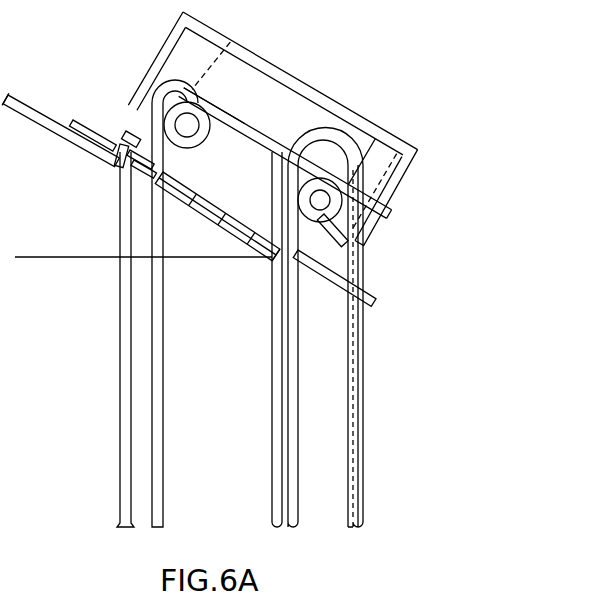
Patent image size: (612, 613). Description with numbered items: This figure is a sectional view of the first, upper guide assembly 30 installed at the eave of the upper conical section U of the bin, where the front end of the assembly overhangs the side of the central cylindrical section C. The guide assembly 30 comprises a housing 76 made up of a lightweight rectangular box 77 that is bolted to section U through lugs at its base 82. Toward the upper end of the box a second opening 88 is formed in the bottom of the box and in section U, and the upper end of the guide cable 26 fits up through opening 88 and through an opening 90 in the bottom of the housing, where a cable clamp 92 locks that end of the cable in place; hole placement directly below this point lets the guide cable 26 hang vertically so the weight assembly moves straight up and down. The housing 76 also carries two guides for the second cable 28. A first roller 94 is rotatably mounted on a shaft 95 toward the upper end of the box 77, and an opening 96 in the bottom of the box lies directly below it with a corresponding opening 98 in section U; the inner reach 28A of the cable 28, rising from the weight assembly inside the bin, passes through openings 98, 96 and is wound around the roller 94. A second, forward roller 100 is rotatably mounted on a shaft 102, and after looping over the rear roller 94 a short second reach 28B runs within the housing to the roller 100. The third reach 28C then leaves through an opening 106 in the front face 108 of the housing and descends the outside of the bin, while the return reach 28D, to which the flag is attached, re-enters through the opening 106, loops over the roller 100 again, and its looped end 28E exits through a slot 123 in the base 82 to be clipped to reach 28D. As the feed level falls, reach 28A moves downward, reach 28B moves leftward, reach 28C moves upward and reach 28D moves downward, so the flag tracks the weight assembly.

The upper conical section U is at (41, 108).
The guide cable 26 is at (116, 298).
The second cable 28 is at (161, 306).
The inner reach 28A is at (165, 421).
The second reach 28B is at (291, 112).
The third reach 28C is at (349, 357).
The return reach 28D is at (364, 373).
The looped end of the cable 28E is at (298, 391).
The first guide assembly 30 is at (374, 82).
The housing 76 is at (156, 46).
The rectangular box 77 is at (233, 38).
The base 82 is at (229, 229).
The second opening 88 is at (115, 163).
The opening 90 is at (115, 143).
The cable clamp 92 is at (133, 131).
The first roller 94 is at (206, 147).
The shaft 95 is at (205, 97).
The opening 96 is at (128, 161).
The opening 98 is at (131, 170).
The second roller 100 is at (298, 188).
The shaft 102 is at (379, 222).
The opening 106 is at (380, 244).
The front face 108 is at (388, 206).
The slot 123 is at (271, 258).
The central hollow cylindrical section C is at (285, 397).